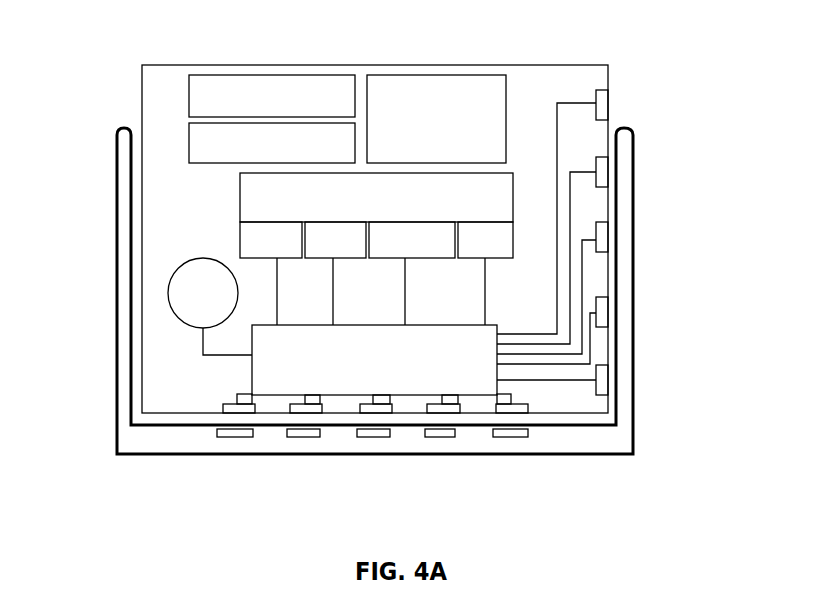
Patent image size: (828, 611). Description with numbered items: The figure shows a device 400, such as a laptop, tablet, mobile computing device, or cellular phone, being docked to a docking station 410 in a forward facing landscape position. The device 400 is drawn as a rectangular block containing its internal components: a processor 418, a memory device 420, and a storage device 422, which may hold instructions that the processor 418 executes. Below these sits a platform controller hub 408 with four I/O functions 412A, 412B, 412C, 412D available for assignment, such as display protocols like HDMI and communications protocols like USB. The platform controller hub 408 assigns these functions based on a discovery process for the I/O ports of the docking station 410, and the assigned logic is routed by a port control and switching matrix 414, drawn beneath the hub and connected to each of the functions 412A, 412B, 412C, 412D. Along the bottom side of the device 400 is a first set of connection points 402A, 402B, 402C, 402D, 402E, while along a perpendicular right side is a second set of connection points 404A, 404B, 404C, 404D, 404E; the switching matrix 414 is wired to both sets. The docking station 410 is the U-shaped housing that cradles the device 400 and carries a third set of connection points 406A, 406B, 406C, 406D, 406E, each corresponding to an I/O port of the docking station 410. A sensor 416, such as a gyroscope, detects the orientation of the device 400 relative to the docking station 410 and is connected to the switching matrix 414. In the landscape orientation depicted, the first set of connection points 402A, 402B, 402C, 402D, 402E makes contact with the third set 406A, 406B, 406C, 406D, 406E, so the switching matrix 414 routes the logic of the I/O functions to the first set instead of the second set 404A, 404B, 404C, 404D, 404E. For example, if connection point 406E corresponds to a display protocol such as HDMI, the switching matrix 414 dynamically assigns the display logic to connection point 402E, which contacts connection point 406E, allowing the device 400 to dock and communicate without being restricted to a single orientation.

The device 400 is at (353, 65).
The connection point of the first set 402A is at (223, 406).
The connection point of the first set 402B is at (292, 406).
The connection point of the first set 402C is at (360, 406).
The connection point of the first set 402D is at (427, 406).
The connection point of the first set 402E is at (496, 406).
The connection point of the second set 404A is at (608, 380).
The connection point of the second set 404B is at (608, 313).
The connection point of the second set 404C is at (608, 240).
The connection point of the second set 404D is at (608, 172).
The connection point of the second set 404E is at (608, 101).
The connection point of the third set 406A is at (252, 437).
The connection point of the third set 406B is at (318, 437).
The connection point of the third set 406C is at (388, 437).
The connection point of the third set 406D is at (453, 437).
The connection point of the third set 406E is at (526, 437).
The platform controller hub 408 is at (376, 197).
The docking station 410 is at (117, 232).
The I/O function 412A is at (271, 273).
The I/O function 412B is at (335, 273).
The I/O function 412C is at (412, 273).
The I/O function 412D is at (485, 273).
The port control and switching matrix 414 is at (424, 249).
The sensor 416 is at (210, 306).
The processor 418 is at (272, 96).
The memory device 420 is at (272, 143).
The storage device 422 is at (436, 119).